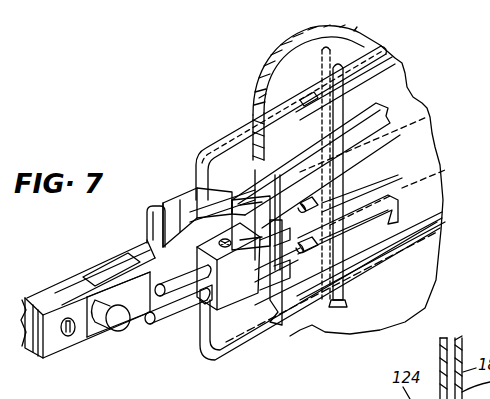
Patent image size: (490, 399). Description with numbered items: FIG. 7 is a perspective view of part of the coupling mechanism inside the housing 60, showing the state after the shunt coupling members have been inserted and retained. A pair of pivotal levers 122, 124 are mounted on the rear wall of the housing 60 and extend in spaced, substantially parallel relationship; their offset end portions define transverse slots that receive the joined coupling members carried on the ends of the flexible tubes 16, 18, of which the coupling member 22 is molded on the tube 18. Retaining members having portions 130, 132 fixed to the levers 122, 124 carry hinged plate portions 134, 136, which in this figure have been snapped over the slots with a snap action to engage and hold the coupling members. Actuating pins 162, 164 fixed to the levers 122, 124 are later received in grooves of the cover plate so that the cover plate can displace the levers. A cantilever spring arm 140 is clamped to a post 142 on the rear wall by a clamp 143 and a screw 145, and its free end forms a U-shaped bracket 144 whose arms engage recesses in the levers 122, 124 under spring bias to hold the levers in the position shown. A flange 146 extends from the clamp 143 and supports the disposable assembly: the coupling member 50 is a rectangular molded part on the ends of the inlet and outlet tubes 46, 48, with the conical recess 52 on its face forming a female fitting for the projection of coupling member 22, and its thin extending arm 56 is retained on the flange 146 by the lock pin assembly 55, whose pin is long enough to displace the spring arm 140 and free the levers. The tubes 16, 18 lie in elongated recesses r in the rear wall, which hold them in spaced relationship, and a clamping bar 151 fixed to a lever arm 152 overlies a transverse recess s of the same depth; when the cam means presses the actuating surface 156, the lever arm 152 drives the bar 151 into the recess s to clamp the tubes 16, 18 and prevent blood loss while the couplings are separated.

The flexible tube 16 is at (313, 300).
The flexible tube 18 is at (281, 102).
The coupling member 22 is at (194, 183).
The inlet tube 46 is at (163, 289).
The tube 48 is at (158, 322).
The coupling member 50 is at (228, 300).
The conical recess 52 is at (227, 248).
The lock pin assembly 55 is at (116, 332).
The extending arm 56 is at (135, 306).
The housing 60 is at (270, 56).
The pivotal lever 122 is at (353, 240).
The pivotal lever 124 is at (288, 162).
The retaining member portion 130 is at (227, 297).
The retaining member portion 132 is at (240, 200).
The hinged plate portion 134 is at (205, 305).
The hinged plate portion 136 is at (184, 205).
The cantilever spring arm 140 is at (117, 258).
The post 142 is at (46, 296).
The clamp 143 is at (56, 350).
The U-shaped bracket 144 is at (147, 207).
The screw 145 is at (71, 335).
The flange 146 is at (92, 281).
The clamping bar 151 is at (355, 84).
The lever arm 152 is at (400, 162).
The actuating surface 156 is at (355, 190).
The actuating pin 162 is at (298, 250).
The actuating pin 164 is at (300, 214).
The elongated recesses r is at (313, 98).
The transverse recess s is at (332, 51).